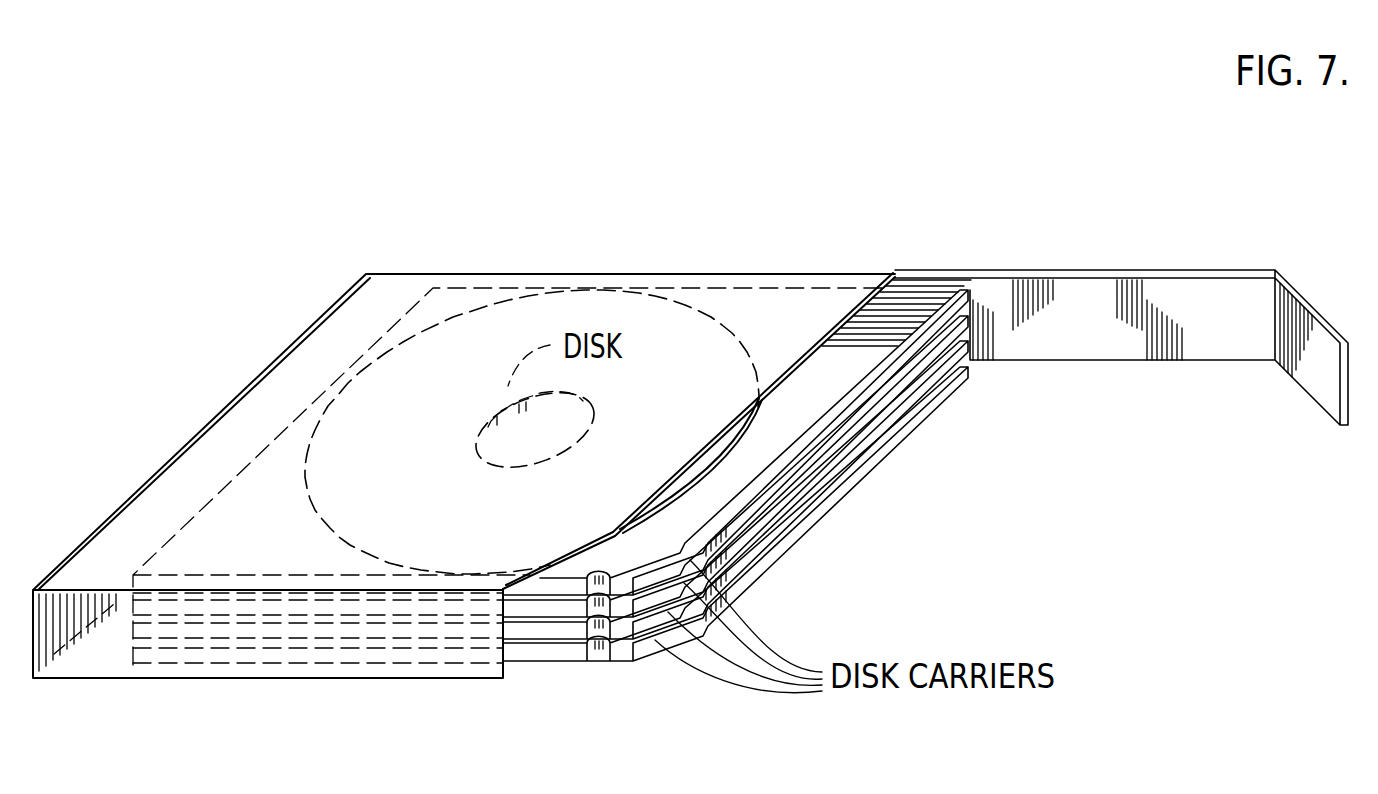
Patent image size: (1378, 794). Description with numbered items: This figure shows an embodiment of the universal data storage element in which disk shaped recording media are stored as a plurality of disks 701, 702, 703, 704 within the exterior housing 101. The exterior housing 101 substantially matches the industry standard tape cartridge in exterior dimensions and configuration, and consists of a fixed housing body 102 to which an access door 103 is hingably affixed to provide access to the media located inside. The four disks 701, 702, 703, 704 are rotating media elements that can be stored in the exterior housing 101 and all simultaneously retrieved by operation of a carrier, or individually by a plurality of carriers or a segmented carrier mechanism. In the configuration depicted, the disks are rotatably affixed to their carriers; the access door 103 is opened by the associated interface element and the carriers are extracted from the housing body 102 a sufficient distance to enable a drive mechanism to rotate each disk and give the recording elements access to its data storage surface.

The exterior housing 101 is at (690, 276).
The housing body 102 is at (388, 292).
The access door 103 is at (1152, 292).
The disk 701 is at (975, 275).
The disk 702 is at (972, 323).
The disk 703 is at (973, 342).
The disk 704 is at (957, 383).